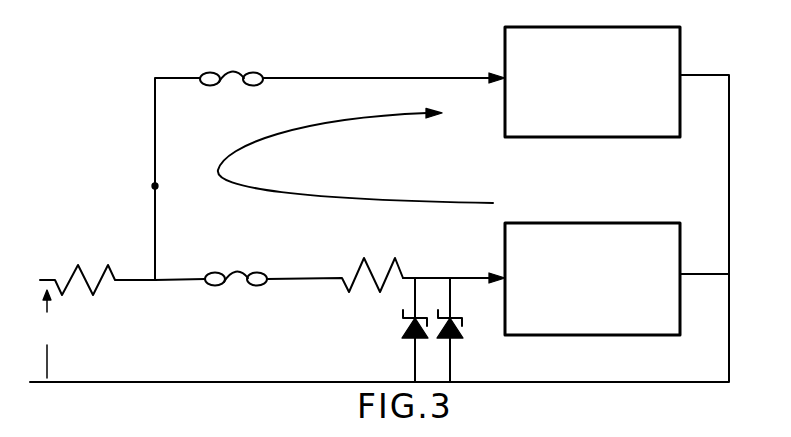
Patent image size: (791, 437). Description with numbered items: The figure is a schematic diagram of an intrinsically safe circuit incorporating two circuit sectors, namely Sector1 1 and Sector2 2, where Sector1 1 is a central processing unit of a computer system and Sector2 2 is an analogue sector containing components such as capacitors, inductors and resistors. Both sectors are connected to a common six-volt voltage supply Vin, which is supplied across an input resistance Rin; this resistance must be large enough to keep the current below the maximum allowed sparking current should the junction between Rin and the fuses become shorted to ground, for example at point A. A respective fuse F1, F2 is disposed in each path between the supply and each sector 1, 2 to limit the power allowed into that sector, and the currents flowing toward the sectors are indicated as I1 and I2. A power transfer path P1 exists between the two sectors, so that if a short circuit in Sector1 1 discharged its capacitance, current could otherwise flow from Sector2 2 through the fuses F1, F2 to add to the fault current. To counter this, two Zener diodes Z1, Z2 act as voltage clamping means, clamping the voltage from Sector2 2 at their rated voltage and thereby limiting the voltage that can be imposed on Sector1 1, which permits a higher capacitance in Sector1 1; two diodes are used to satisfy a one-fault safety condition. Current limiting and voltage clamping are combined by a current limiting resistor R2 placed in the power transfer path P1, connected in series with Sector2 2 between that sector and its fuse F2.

The sector 1 is at (680, 38).
The sector 2 is at (655, 222).
The fuse F1 is at (231, 61).
The fuse F2 is at (236, 261).
The input resistance Rin is at (97, 264).
The current limiting resistor R2 is at (335, 263).
The Zener diode Z1 is at (395, 330).
The Zener diode Z2 is at (463, 330).
The current I1 is at (384, 91).
The current I2 is at (454, 265).
The power transfer path P1 is at (355, 156).
The point A is at (155, 186).
The voltage supply Vin is at (81, 334).